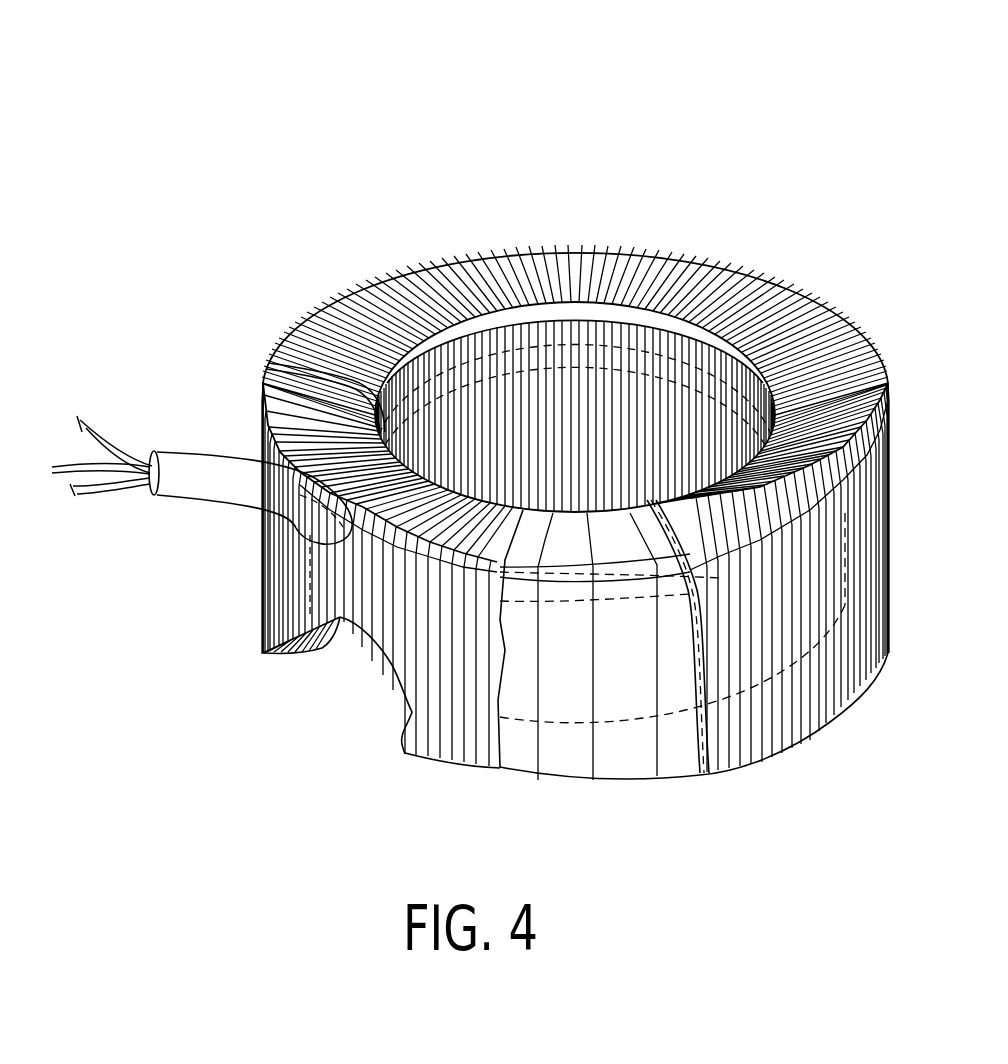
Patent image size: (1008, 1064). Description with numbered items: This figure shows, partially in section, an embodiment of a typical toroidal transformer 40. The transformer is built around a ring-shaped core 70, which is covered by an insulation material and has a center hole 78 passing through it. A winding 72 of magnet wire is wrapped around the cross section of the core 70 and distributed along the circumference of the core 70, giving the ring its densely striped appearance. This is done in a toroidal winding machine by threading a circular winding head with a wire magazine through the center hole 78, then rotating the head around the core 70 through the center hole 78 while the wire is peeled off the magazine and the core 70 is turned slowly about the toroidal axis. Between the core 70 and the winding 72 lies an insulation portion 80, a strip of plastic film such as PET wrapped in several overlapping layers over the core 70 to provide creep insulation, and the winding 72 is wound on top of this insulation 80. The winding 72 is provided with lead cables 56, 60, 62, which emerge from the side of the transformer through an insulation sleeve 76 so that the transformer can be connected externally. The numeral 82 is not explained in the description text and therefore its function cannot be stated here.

The toroidal transformer 40 is at (318, 122).
The lead cable 56 is at (97, 437).
The lead cable 60 is at (62, 462).
The lead cable 62 is at (93, 487).
The core 70 is at (370, 677).
The winding 72 is at (827, 703).
The insulation sleeve 76 is at (203, 497).
The center hole 78 is at (580, 363).
The insulation portion 80 is at (620, 780).
The edge flange 82 is at (262, 632).